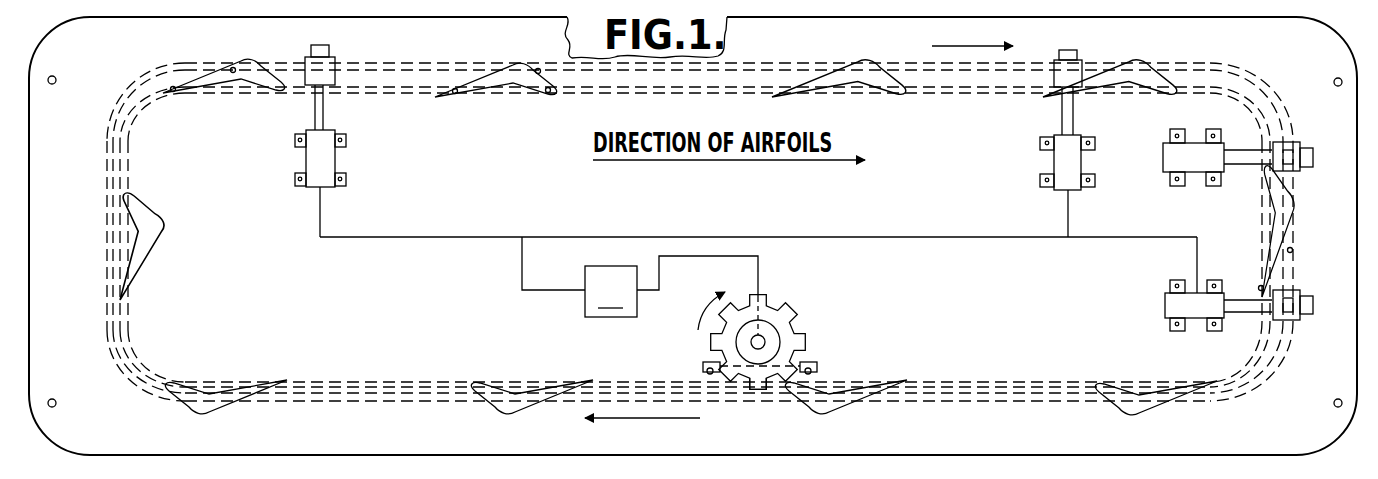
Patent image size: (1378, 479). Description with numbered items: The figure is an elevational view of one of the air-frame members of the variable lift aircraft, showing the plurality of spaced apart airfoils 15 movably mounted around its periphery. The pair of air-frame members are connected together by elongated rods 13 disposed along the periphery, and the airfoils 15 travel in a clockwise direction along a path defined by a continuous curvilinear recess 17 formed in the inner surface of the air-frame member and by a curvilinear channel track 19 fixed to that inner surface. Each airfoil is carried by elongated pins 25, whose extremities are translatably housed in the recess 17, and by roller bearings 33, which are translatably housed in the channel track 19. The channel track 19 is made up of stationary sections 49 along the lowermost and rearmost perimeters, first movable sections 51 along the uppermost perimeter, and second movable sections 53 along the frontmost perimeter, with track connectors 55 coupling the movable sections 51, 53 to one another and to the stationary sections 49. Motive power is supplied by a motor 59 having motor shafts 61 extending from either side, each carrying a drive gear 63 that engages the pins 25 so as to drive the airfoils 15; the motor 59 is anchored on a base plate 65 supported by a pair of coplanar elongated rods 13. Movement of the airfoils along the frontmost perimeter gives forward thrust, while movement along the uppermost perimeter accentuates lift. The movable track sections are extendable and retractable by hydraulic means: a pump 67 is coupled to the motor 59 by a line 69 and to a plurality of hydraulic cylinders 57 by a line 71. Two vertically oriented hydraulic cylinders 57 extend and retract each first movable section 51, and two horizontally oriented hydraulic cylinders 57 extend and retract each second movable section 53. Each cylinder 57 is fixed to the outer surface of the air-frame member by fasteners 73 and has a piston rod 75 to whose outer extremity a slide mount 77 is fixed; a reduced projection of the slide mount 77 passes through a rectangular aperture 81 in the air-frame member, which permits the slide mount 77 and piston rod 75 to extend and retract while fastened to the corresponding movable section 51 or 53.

The elongated rods 13 is at (56, 78).
The airfoils 15 is at (871, 61).
The curvilinear recess 17 is at (500, 85).
The curvilinear channel track 19 is at (1088, 58).
The elongated pins 25 is at (453, 88).
The roller bearings 33 is at (235, 68).
The stationary sections 49 is at (108, 335).
The first movable sections 51 is at (742, 63).
The second movable sections 53 is at (1293, 192).
The track connectors 55 is at (128, 88).
The hydraulic cylinders 57 is at (305, 152).
The motor 59 is at (778, 340).
The motor shafts 61 is at (720, 331).
The drive gear 63 is at (780, 300).
The base plate 65 is at (760, 387).
The pump 67 is at (611, 291).
The line 69 is at (700, 258).
The line 71 is at (522, 275).
The fasteners 73 is at (343, 137).
The piston rod 75 is at (1074, 118).
The slide mount 77 is at (335, 60).
The rectangular aperture 81 is at (1313, 148).